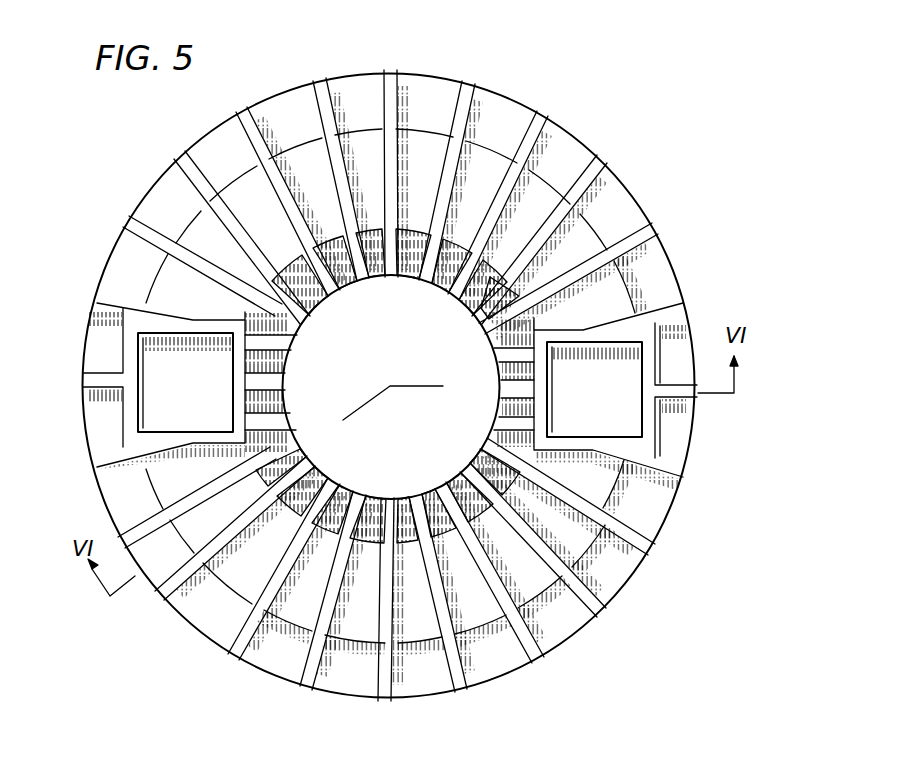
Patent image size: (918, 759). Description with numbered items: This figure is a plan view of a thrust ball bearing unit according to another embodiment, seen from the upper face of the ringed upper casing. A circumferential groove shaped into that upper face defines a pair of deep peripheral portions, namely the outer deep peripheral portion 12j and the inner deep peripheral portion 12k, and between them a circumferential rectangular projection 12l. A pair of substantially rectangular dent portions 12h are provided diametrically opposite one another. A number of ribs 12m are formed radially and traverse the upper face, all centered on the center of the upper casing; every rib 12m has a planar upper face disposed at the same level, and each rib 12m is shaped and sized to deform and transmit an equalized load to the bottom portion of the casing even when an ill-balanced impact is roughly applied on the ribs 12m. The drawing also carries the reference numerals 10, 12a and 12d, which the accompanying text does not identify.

The stator core 10 is at (647, 195).
The yoke portion 12a is at (113, 247).
The central bore 12d is at (302, 315).
The rectangular dent portion 12h is at (150, 390).
The outer deep peripheral portion 12j is at (288, 112).
The inner deep peripheral portion 12k is at (428, 283).
The circumferential rectangular projection 12l is at (367, 125).
The rib 12m is at (183, 162).